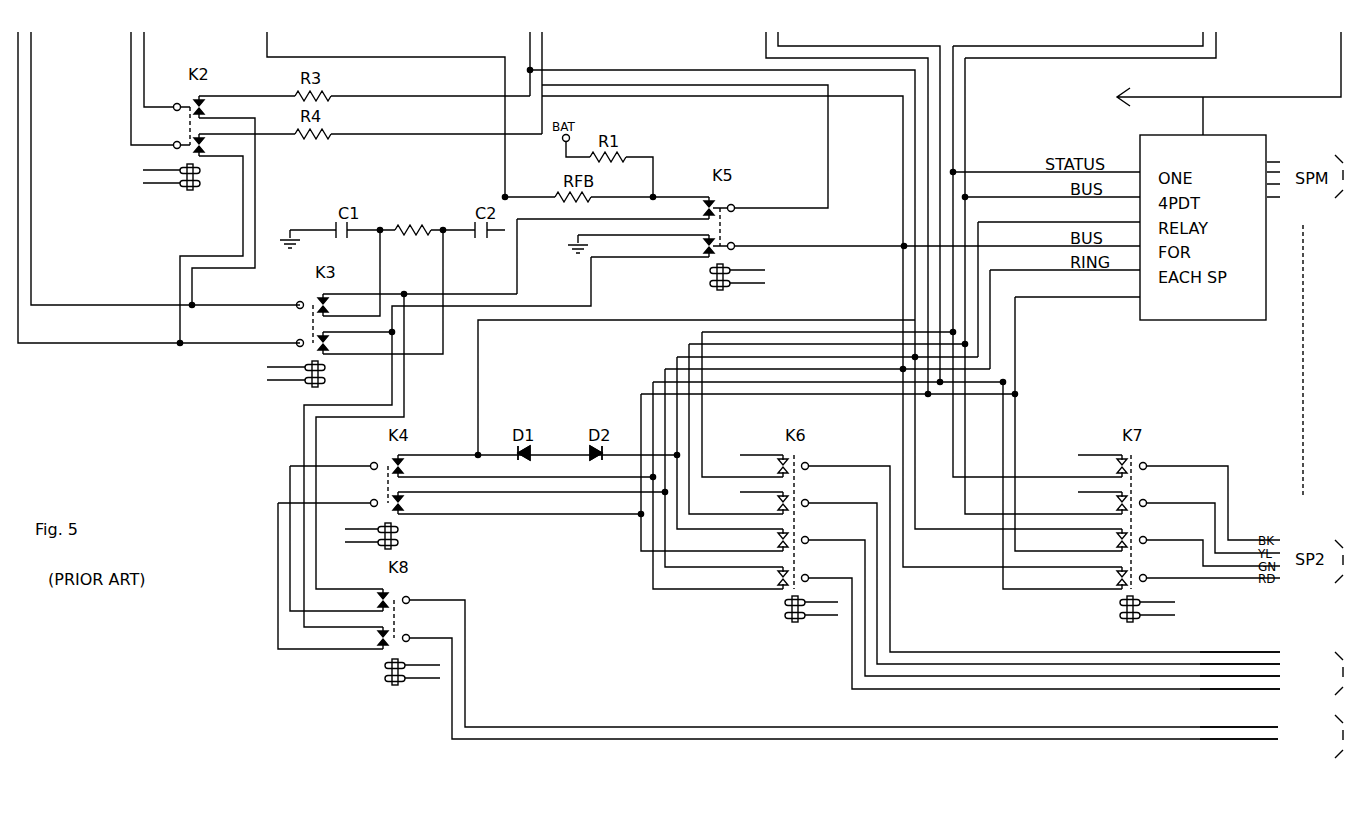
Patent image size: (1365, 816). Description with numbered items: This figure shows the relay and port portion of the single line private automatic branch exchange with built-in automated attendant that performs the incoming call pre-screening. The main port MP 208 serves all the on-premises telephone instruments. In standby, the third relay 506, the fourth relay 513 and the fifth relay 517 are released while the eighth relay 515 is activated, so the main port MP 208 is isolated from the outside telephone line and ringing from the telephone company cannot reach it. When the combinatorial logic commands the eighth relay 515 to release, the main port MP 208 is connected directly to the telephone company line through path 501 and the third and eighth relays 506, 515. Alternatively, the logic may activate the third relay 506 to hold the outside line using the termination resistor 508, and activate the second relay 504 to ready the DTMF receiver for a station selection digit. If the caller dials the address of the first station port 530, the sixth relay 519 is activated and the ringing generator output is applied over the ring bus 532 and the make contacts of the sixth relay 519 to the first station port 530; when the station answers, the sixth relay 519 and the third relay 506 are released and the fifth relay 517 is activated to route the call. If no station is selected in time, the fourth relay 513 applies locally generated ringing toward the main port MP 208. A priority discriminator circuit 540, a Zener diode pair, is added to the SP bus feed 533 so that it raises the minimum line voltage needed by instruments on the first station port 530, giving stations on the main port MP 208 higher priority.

The path 501 is at (36, 68).
The relay K2 504 is at (178, 197).
The relay K3 506 is at (330, 384).
The termination resistor R2 508 is at (418, 207).
The relay K4 513 is at (428, 530).
The relay K8 515 is at (376, 660).
The relay K5 517 is at (780, 276).
The relay K6 519 is at (773, 605).
The priority discriminator circuit 540 is at (553, 434).
The SP bus feed 533 is at (1040, 224).
The ring bus 532 is at (1040, 298).
The SP1 530 is at (1288, 641).
The main port MP 208 is at (1288, 728).